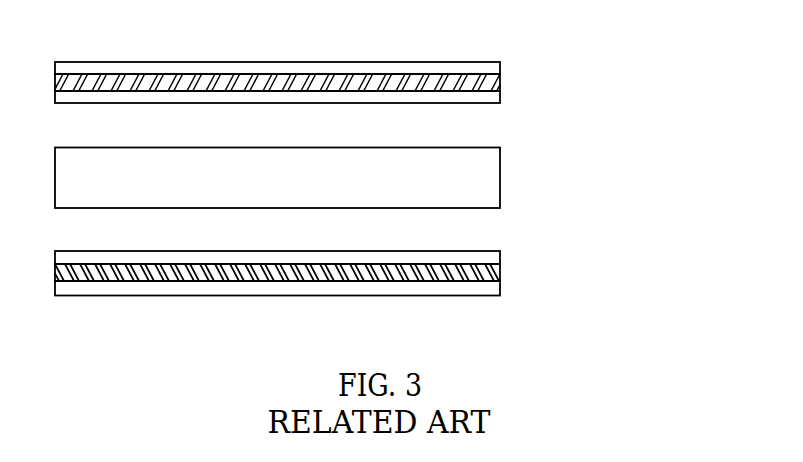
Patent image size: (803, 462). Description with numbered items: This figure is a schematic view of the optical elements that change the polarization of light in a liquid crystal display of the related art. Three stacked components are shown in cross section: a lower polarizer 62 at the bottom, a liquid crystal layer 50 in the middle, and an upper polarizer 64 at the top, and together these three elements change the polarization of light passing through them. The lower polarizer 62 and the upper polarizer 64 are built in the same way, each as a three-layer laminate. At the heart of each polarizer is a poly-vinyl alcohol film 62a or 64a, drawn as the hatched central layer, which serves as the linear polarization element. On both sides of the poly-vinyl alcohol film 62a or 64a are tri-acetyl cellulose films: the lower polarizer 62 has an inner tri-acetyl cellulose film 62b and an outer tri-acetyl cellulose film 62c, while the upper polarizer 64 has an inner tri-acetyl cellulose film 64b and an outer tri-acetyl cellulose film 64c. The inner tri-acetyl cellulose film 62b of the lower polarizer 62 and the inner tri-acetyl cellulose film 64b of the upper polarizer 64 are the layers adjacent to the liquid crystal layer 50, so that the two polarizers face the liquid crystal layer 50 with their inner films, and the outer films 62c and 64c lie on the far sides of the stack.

The liquid crystal layer 50 is at (500, 175).
The lower polarizer 62 is at (381, 252).
The poly-vinyl alcohol (PVA) film 62a is at (500, 266).
The inner tri-acetyl cellulose (TAC) film 62b is at (500, 251).
The outer tri-acetyl cellulose (TAC) film 62c is at (351, 295).
The upper polarizer 64 is at (383, 63).
The poly-vinyl alcohol (PVA) film 64a is at (500, 75).
The inner tri-acetyl cellulose (TAC) film 64b is at (352, 106).
The outer tri-acetyl cellulose (TAC) film 64c is at (500, 62).